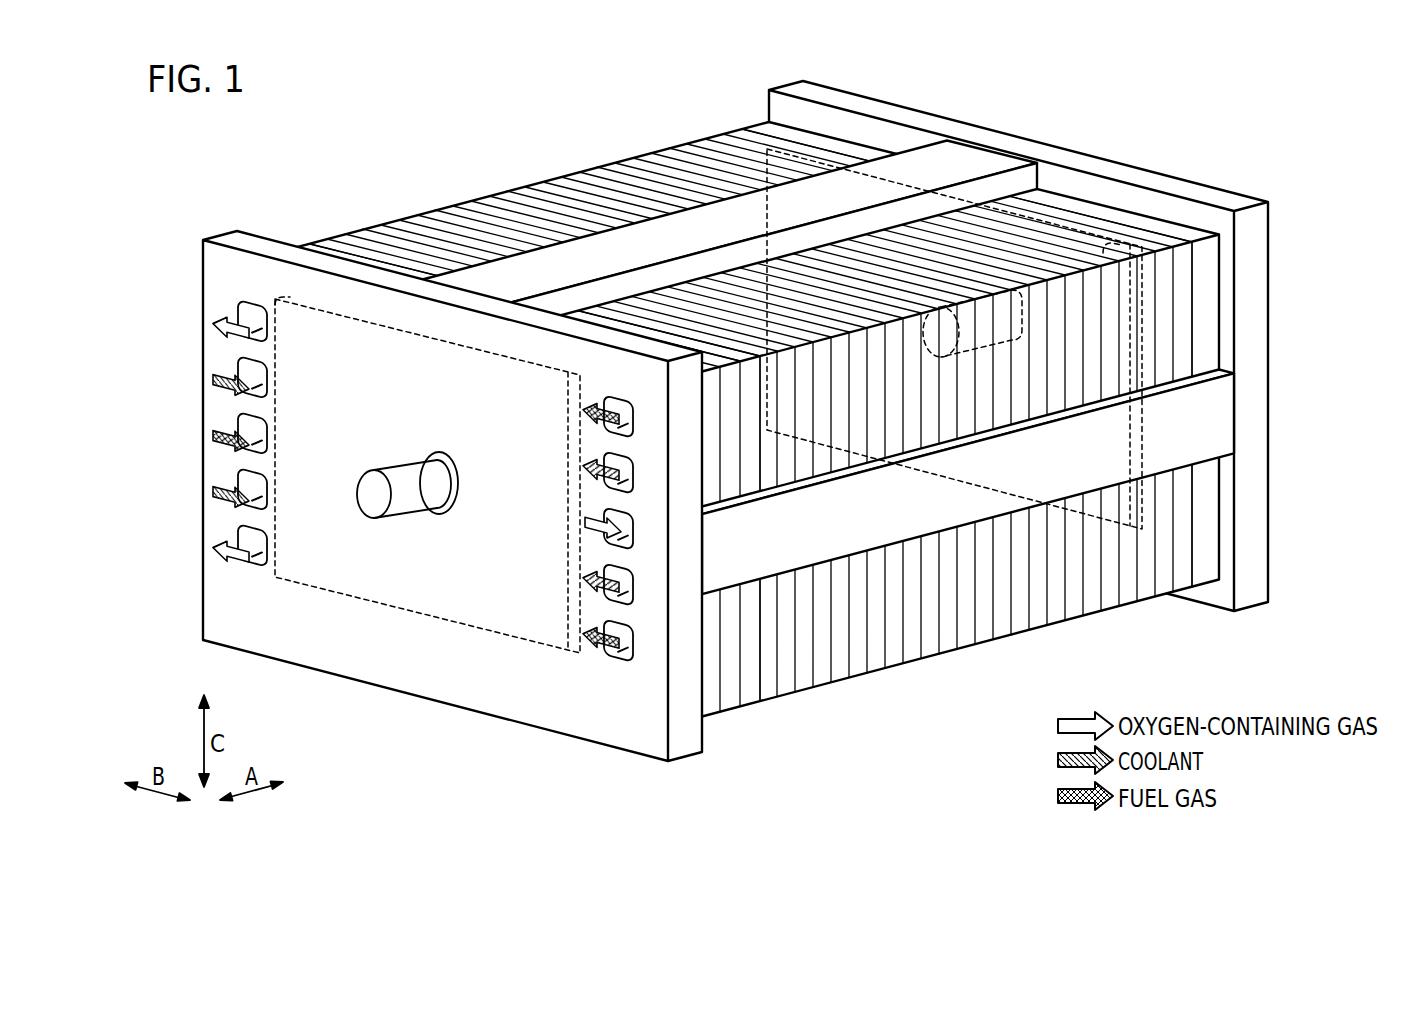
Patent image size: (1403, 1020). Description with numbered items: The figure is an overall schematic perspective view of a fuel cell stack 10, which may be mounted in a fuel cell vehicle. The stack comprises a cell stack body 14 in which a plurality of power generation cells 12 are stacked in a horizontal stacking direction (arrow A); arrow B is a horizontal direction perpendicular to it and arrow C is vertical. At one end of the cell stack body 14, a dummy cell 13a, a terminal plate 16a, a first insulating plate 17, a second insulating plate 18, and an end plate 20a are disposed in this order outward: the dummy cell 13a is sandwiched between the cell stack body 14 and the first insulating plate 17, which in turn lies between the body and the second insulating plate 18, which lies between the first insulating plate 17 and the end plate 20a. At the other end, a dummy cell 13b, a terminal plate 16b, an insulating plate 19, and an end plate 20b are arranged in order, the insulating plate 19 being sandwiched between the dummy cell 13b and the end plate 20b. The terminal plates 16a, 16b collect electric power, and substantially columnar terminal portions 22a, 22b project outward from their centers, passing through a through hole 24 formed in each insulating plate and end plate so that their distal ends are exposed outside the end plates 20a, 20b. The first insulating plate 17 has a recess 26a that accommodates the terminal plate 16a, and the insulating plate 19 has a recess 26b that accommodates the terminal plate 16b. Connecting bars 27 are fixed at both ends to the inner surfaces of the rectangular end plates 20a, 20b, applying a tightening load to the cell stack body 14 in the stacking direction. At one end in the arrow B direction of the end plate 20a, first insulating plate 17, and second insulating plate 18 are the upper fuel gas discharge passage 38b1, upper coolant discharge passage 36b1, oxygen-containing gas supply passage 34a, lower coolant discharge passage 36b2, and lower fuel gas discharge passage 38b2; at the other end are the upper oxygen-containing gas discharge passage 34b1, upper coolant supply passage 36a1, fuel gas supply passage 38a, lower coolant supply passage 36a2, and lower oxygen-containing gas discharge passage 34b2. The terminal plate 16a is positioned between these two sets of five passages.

The fuel cell stack 10 is at (310, 138).
The power generation cell 12 is at (455, 210).
The cell stack body 14 is at (550, 135).
The dummy cell 13a is at (752, 688).
The dummy cell 13b is at (1185, 572).
The terminal plate 16a is at (504, 641).
The terminal plate 16b is at (1143, 326).
The first insulating plate 17 is at (730, 703).
The second insulating plate 18 is at (708, 708).
The insulating plate 19 is at (1204, 551).
The end plate 20a is at (398, 676).
The end plate 20b is at (1255, 245).
The terminal portion 22a is at (374, 512).
The terminal portion 22b is at (1025, 311).
The through hole 24 is at (436, 501).
The recess 26a is at (292, 297).
The recess 26b is at (1105, 244).
The connecting bar 27 is at (987, 158).
The oxygen-containing gas supply passage 34a is at (604, 518).
The upper oxygen-containing gas discharge passage 34b1 is at (262, 319).
The lower oxygen-containing gas discharge passage 34b2 is at (254, 560).
The upper coolant supply passage 36a1 is at (262, 373).
The lower coolant supply passage 36a2 is at (262, 501).
The upper coolant discharge passage 36b1 is at (604, 466).
The lower coolant discharge passage 36b2 is at (604, 580).
The fuel gas supply passage 38a is at (262, 426).
The upper fuel gas discharge passage 38b1 is at (604, 409).
The lower fuel gas discharge passage 38b2 is at (604, 634).